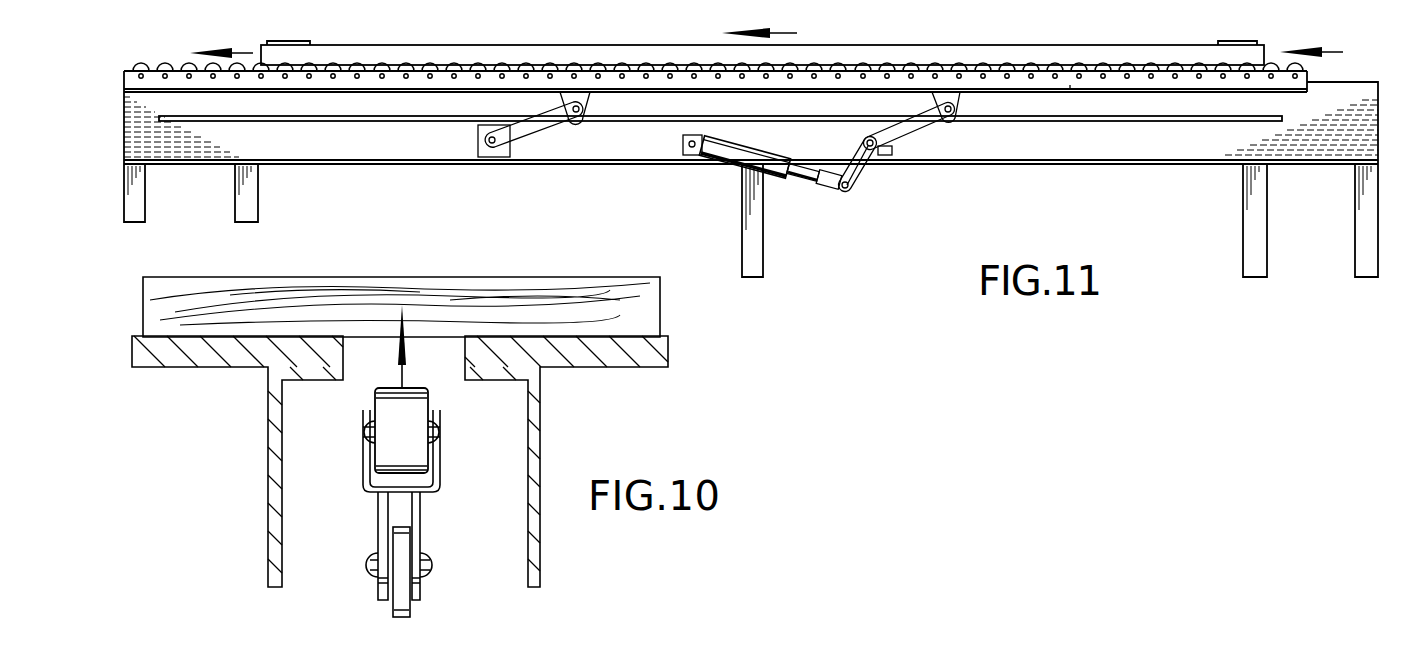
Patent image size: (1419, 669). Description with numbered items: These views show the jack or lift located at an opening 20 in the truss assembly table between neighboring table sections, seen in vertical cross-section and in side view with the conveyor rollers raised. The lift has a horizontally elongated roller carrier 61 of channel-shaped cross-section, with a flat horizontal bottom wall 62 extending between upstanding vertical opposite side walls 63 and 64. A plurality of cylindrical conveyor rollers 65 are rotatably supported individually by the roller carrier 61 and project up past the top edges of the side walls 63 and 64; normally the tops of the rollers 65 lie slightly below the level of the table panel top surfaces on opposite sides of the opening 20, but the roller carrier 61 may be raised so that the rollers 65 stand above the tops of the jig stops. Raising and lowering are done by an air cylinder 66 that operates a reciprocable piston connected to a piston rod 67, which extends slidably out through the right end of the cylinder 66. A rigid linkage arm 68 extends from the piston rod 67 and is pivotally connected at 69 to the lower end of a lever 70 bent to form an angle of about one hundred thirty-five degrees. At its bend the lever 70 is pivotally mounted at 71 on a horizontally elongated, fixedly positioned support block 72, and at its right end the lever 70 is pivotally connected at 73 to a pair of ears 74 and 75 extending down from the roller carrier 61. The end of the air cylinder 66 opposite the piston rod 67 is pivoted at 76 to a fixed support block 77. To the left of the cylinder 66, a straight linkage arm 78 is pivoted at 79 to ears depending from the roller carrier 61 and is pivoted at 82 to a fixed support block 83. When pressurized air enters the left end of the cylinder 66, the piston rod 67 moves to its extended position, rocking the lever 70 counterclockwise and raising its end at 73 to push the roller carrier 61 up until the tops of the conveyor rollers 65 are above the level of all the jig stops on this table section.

In FIG. 10, the opening 20 is at (428, 358).
In FIG. 11, the roller carrier 61 is at (1070, 85).
In FIG. 10, the roller carrier 61 is at (415, 460).
In FIG. 10, the bottom wall 62 is at (377, 497).
In FIG. 10, the side wall 63 is at (440, 460).
In FIG. 10, the side wall 64 is at (363, 458).
In FIG. 11, the conveyor rollers 65 is at (937, 68).
In FIG. 10, the conveyor rollers 65 is at (395, 397).
In FIG. 11, the air cylinder 66 is at (732, 168).
In FIG. 11, the piston rod 67 is at (800, 183).
In FIG. 11, the linkage arm 68 is at (829, 190).
In FIG. 11, the pivotal connection 69 is at (848, 190).
In FIG. 11, the lever 70 is at (917, 126).
In FIG. 10, the lever 70 is at (393, 615).
In FIG. 11, the pivotal mounting 71 is at (871, 150).
In FIG. 11, the support block 72 is at (827, 149).
In FIG. 11, the pivotal connection 73 is at (950, 114).
In FIG. 10, the ear 74 is at (423, 522).
In FIG. 11, the ear 75 is at (958, 97).
In FIG. 10, the ear 75 is at (423, 592).
In FIG. 11, the pivot 76 is at (692, 154).
In FIG. 11, the support block 77 is at (683, 143).
In FIG. 11, the linkage arm 78 is at (532, 128).
In FIG. 11, the pivot 79 is at (592, 107).
In FIG. 11, the pivot 82 is at (492, 144).
In FIG. 11, the support block 83 is at (478, 132).